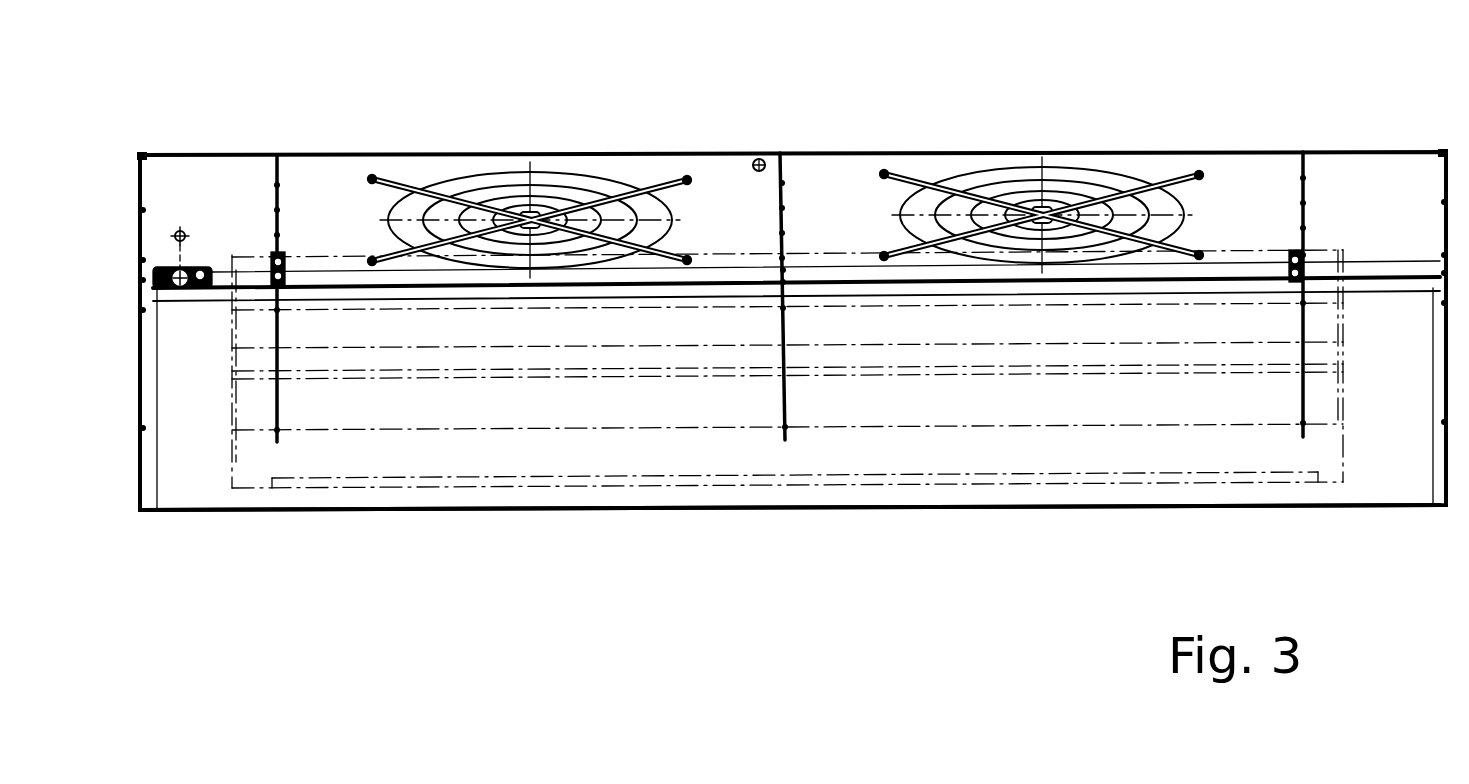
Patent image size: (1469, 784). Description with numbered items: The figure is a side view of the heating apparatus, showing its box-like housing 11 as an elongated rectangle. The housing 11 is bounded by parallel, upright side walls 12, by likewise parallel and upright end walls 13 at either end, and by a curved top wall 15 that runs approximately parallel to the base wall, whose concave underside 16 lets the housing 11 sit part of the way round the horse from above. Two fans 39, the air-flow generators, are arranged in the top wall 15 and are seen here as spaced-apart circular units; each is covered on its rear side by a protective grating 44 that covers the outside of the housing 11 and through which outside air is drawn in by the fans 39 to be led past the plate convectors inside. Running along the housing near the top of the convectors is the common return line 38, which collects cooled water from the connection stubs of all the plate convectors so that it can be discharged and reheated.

The housing 11 is at (835, 193).
The side wall 12 is at (1400, 382).
The end wall 13 is at (126, 180).
The top wall 15 is at (717, 195).
The underside 16 is at (794, 526).
The return line 38 is at (200, 268).
The fan 39 is at (566, 188).
The protective grating 44 is at (483, 190).